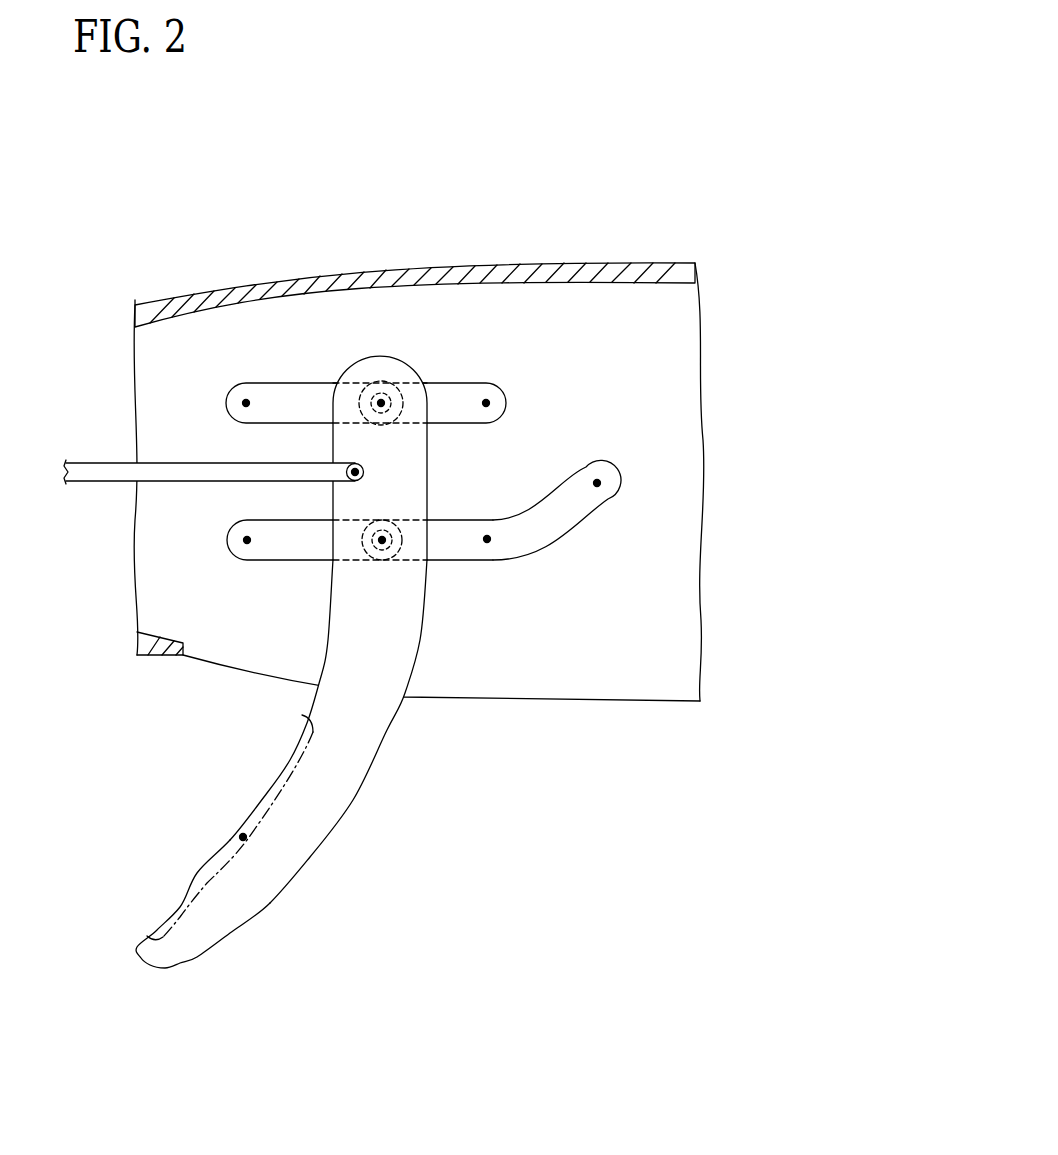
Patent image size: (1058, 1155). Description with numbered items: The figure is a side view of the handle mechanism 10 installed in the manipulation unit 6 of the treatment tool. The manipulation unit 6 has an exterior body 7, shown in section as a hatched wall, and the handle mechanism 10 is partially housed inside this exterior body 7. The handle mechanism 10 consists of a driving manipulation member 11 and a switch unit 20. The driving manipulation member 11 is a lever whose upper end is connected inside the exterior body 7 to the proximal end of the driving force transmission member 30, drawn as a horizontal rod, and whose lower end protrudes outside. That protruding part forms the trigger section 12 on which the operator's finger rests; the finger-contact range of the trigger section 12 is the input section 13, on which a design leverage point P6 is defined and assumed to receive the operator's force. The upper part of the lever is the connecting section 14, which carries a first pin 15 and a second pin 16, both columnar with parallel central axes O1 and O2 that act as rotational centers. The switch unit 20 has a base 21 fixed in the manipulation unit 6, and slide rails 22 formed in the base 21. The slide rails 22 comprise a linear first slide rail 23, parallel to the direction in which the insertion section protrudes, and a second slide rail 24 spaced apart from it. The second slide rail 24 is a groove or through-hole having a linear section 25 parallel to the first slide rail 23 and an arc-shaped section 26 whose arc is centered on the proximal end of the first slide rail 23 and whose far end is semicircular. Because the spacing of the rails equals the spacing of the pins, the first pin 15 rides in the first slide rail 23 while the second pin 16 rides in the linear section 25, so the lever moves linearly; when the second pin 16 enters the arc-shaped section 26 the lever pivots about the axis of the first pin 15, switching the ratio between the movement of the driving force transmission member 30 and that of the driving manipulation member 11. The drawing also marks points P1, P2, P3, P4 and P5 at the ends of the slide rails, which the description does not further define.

The manipulation unit 6 is at (580, 202).
The exterior body 7 is at (447, 267).
The handle mechanism 10 is at (364, 595).
The driving manipulation member 11 is at (323, 800).
The trigger section 12 is at (210, 848).
The input section 13 is at (233, 865).
The connecting section 14 is at (322, 576).
The first pin 15 is at (389, 394).
The second pin 16 is at (386, 542).
The switch unit 20 is at (520, 437).
The base 21 is at (658, 334).
The slide rails 22 is at (542, 458).
The first slide rail 23 is at (500, 403).
The second slide rail 24 is at (519, 495).
The linear section 25 is at (453, 530).
The arc-shaped section 26 is at (597, 503).
The driving force transmission member 30 is at (185, 473).
The central axis of first pin O1 is at (381, 398).
The central axis of second pin O2 is at (382, 550).
The position P1 is at (246, 398).
The position P2 is at (486, 398).
The position P3 is at (247, 545).
The position P4 is at (487, 544).
The position P5 is at (597, 488).
The leverage point P6 is at (242, 834).